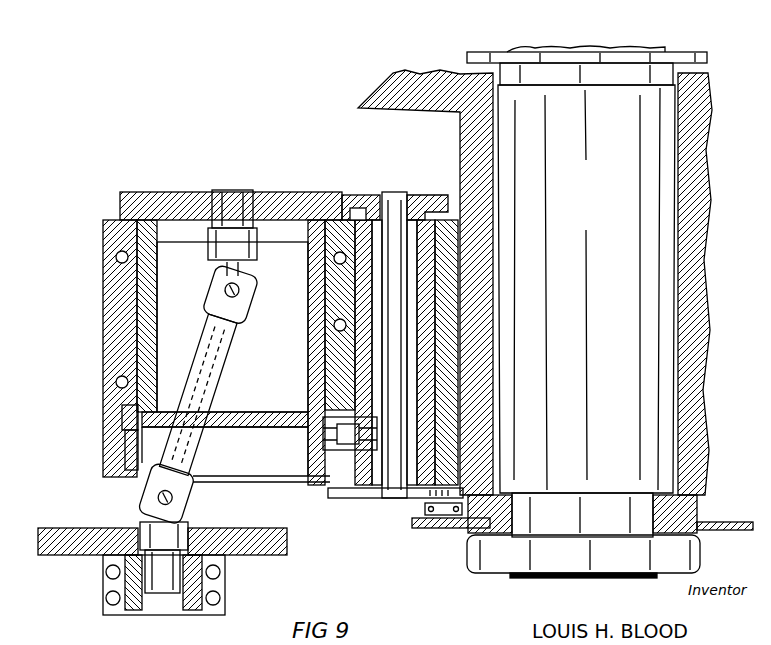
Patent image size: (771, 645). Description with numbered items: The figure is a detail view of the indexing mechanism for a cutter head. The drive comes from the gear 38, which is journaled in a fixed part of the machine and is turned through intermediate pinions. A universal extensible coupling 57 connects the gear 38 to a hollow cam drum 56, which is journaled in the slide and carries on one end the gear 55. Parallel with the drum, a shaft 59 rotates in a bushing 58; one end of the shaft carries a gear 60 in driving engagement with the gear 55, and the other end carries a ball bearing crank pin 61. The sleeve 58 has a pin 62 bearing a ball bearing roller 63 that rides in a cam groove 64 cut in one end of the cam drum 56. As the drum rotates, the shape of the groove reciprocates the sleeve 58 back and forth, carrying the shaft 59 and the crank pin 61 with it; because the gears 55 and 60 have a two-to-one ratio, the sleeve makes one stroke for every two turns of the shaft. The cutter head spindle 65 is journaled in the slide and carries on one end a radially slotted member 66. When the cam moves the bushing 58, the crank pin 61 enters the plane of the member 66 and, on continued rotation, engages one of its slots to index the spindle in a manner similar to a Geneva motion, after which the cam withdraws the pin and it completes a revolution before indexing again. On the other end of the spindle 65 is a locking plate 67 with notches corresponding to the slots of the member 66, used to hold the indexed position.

The gear 38 is at (240, 570).
The gear 55 is at (120, 204).
The hollow cam drum 56 is at (206, 200).
The universal extensible coupling 57 is at (215, 385).
The bushing 58 is at (364, 198).
The shaft 59 is at (396, 192).
The gear 60 is at (428, 198).
The ball bearing crank pin 61 is at (425, 509).
The pin 62 is at (348, 452).
The ball bearing roller 63 is at (330, 492).
The cam groove 64 is at (125, 440).
The cutter head spindle 65 is at (672, 160).
The radially slotted member 66 is at (752, 530).
The locking plate 67 is at (690, 50).